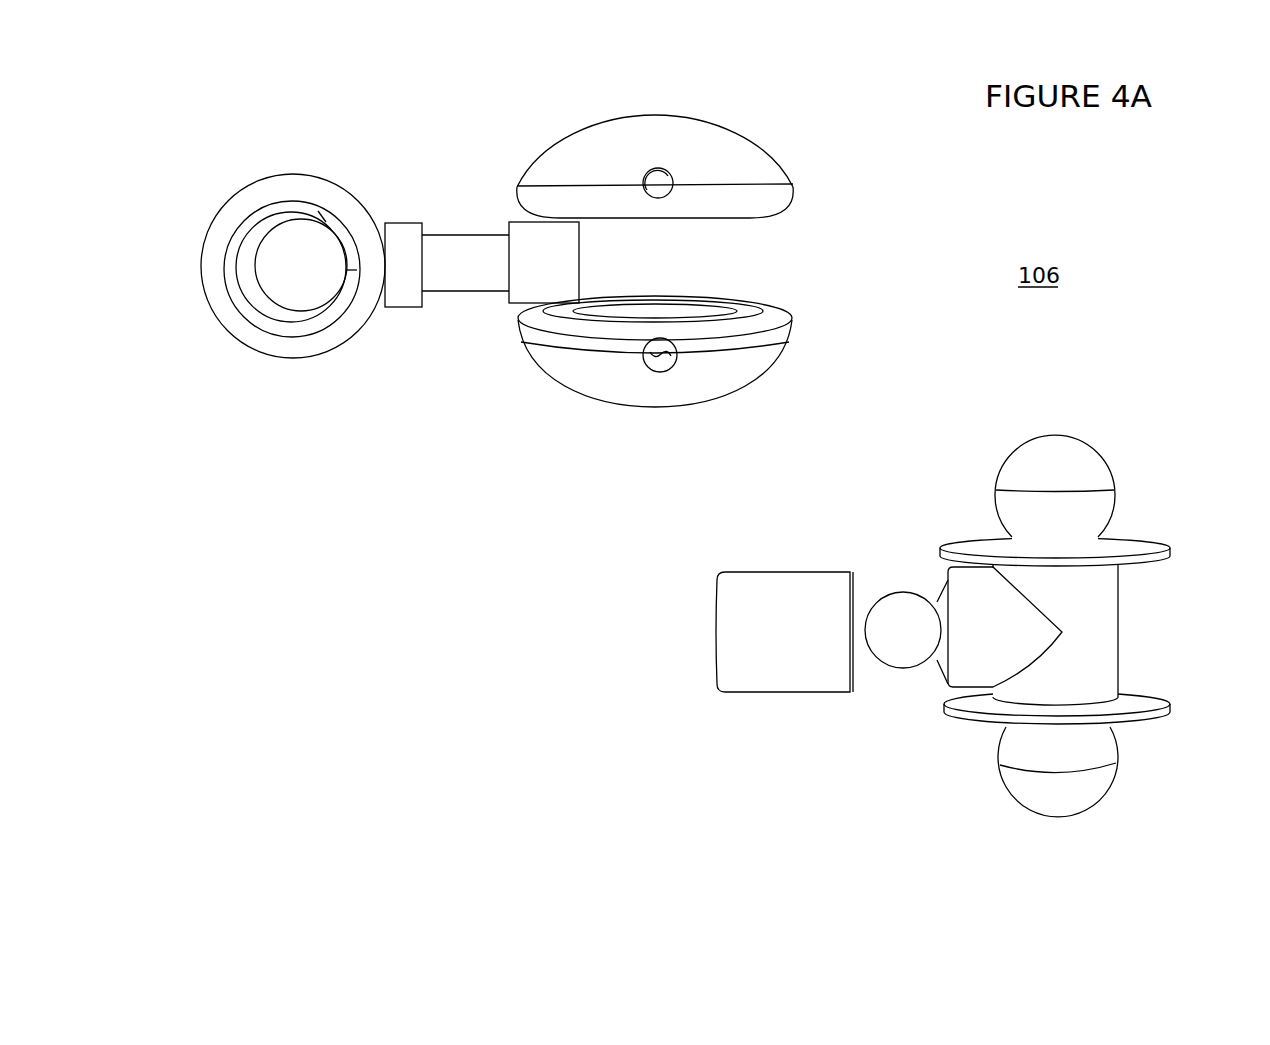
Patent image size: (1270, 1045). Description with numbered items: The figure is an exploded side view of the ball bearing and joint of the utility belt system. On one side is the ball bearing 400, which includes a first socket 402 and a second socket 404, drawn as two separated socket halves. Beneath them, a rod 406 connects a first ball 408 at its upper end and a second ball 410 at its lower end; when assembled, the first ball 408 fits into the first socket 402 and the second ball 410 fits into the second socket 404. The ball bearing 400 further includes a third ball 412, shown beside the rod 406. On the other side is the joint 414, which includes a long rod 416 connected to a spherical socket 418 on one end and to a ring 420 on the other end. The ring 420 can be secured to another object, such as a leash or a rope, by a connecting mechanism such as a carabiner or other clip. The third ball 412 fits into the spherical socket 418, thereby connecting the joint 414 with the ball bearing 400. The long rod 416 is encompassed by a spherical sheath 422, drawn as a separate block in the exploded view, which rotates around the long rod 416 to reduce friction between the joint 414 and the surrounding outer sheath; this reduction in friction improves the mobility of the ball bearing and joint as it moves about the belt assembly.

The ball bearing 400 is at (802, 342).
The first socket 402 is at (660, 133).
The second socket 404 is at (662, 392).
The rod 406 is at (1097, 615).
The first ball 408 is at (1065, 473).
The second ball 410 is at (1068, 802).
The third ball 412 is at (907, 655).
The joint 414 is at (367, 177).
The long rod 416 is at (478, 283).
The spherical socket 418 is at (530, 240).
The ring 420 is at (283, 350).
The spherical sheath 422 is at (778, 678).